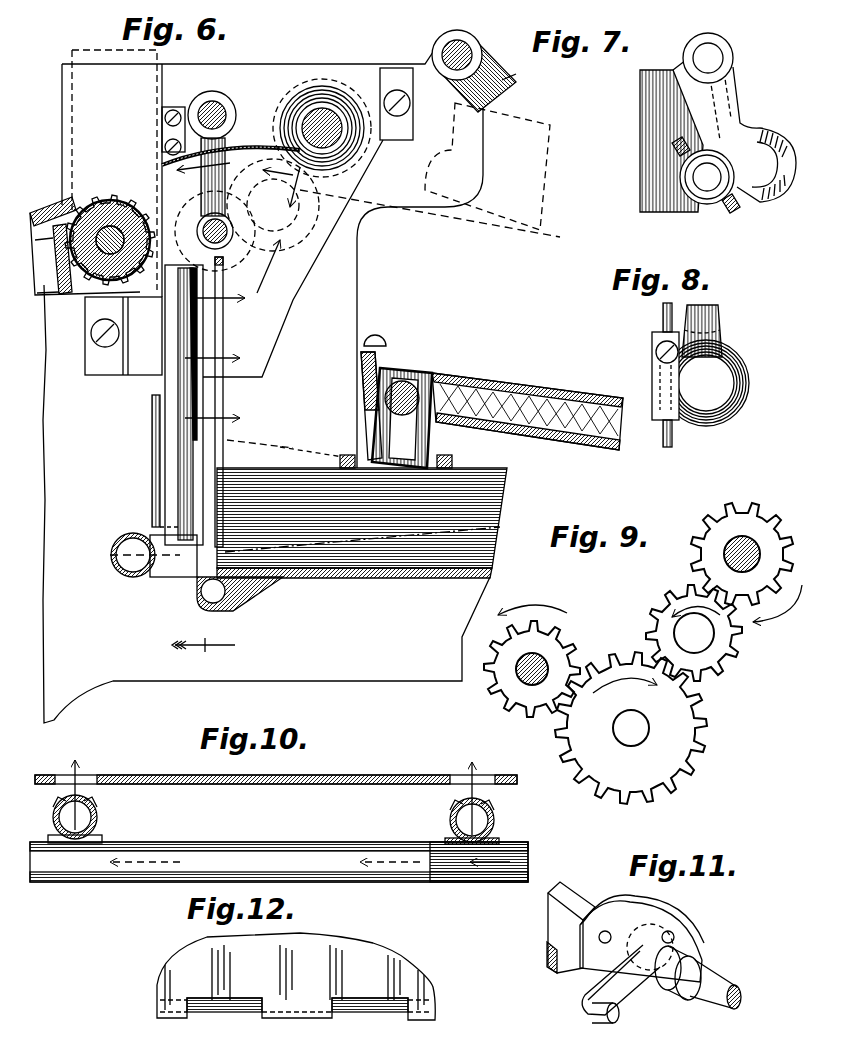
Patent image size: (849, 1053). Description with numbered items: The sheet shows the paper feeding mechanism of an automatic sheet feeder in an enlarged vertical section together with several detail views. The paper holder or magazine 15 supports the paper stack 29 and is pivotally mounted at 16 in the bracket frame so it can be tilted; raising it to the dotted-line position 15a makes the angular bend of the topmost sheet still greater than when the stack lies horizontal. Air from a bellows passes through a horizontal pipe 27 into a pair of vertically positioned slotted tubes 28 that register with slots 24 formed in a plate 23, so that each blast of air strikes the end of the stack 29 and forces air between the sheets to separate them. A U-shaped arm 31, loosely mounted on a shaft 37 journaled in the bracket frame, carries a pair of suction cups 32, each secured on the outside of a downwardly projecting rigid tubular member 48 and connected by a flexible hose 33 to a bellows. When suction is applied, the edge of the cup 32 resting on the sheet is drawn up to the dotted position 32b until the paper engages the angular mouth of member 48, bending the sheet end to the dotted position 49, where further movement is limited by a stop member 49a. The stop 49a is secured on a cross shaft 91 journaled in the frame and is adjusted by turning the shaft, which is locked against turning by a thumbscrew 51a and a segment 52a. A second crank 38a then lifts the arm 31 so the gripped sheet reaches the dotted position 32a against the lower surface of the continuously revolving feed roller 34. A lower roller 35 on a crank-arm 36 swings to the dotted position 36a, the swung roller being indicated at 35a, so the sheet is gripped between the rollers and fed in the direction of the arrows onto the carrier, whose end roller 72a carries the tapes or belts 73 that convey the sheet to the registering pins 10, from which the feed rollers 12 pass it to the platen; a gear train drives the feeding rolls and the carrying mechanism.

In FIG. 6, the registering pins 10 is at (160, 386).
In FIG. 6, the feed rollers 12 is at (203, 594).
In FIG. 6, the paper holder 15 is at (407, 580).
In FIG. 12, the paper holder 15 is at (240, 1008).
In FIG. 6, the raised dotted-line position of paper holder 15a is at (500, 522).
In FIG. 6, the pivotal mounting 16 is at (197, 590).
In FIG. 6, the plate 23 is at (233, 410).
In FIG. 10, the plate 23 is at (320, 784).
In FIG. 12, the plate 23 is at (285, 948).
In FIG. 6, the slots 24 is at (260, 453).
In FIG. 10, the slots 24 is at (291, 796).
In FIG. 6, the horizontal pipe 27 is at (128, 567).
In FIG. 10, the horizontal pipe 27 is at (279, 862).
In FIG. 6, the slotted tubes 28 is at (175, 458).
In FIG. 10, the slotted tubes 28 is at (95, 818).
In FIG. 6, the paper stack 29 is at (495, 502).
In FIG. 6, the U-shaped arm 31 is at (362, 368).
In FIG. 8, the U-shaped arm 31 is at (670, 447).
In FIG. 11, the U-shaped arm 31 is at (566, 927).
In FIG. 6, the suction cups 32 is at (452, 466).
In FIG. 8, the suction cups 32 is at (750, 384).
In FIG. 6, the dotted-line lifted position of sheet 32a is at (487, 166).
In FIG. 6, the dotted-line drawn-up position of cup edge 32b is at (311, 443).
In FIG. 6, the flexible hose 33 is at (545, 405).
In FIG. 8, the flexible hose 33 is at (720, 318).
In FIG. 6, the feed roller 34 is at (334, 90).
In FIG. 6, the second roller 35 is at (200, 231).
In FIG. 6, the pulley path 35a is at (252, 226).
In FIG. 6, the crank-arm 36 is at (208, 185).
In FIG. 6, the dotted-line position of crank-arm 36a is at (247, 130).
In FIG. 11, the shaft 37 is at (711, 977).
In FIG. 11, the second crank 38a is at (637, 985).
In FIG. 6, the rigid member 48 is at (425, 372).
In FIG. 8, the rigid member 48 is at (706, 383).
In FIG. 6, the dotted-line bent position of sheet end 49 is at (233, 437).
In FIG. 6, the stop member 49a is at (527, 68).
In FIG. 7, the thumbscrew 51a is at (720, 203).
In FIG. 7, the segment 52a is at (768, 194).
In FIG. 6, the bracket 72a is at (140, 184).
In FIG. 6, the carrying tapes or belts 73 is at (98, 237).
In FIG. 6, the cross shaft 91 is at (461, 44).
In FIG. 7, the cross shaft 91 is at (718, 58).